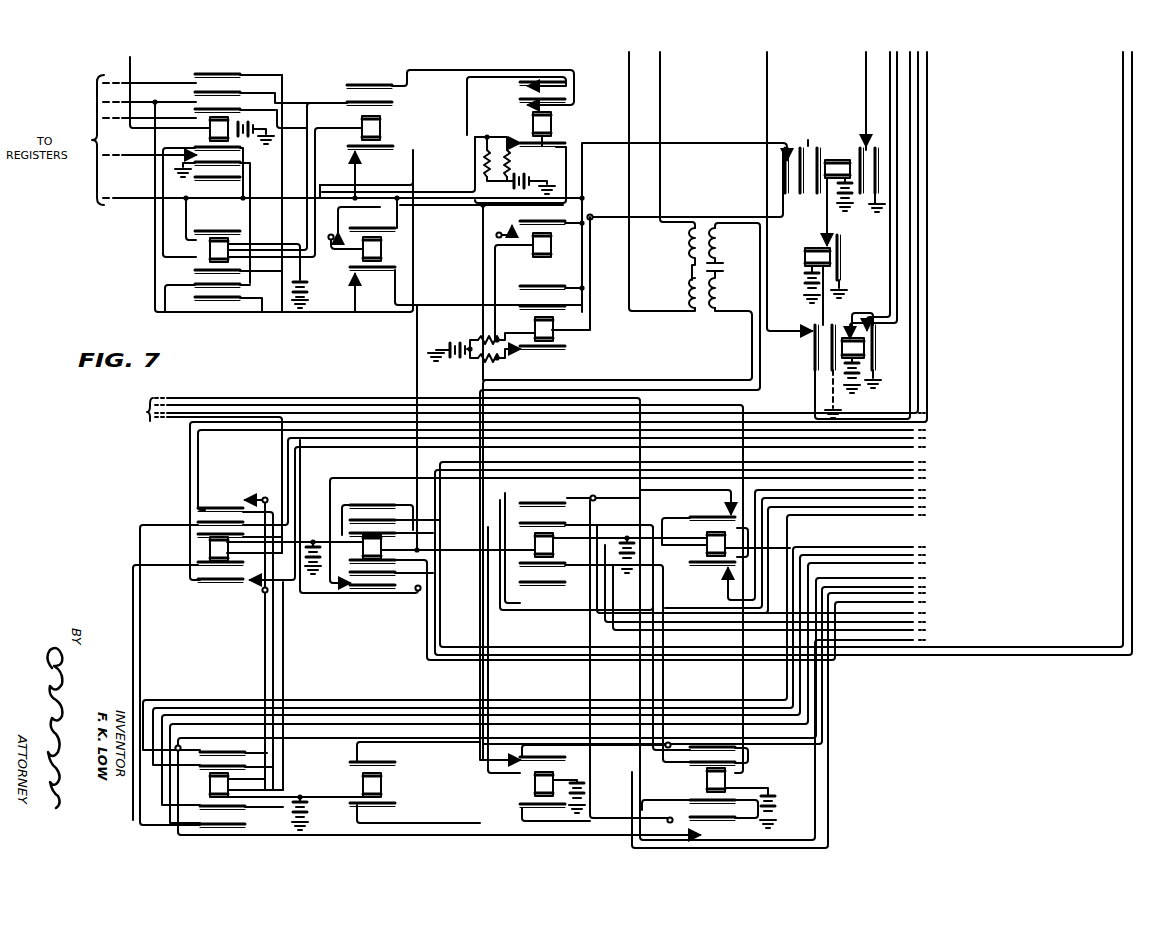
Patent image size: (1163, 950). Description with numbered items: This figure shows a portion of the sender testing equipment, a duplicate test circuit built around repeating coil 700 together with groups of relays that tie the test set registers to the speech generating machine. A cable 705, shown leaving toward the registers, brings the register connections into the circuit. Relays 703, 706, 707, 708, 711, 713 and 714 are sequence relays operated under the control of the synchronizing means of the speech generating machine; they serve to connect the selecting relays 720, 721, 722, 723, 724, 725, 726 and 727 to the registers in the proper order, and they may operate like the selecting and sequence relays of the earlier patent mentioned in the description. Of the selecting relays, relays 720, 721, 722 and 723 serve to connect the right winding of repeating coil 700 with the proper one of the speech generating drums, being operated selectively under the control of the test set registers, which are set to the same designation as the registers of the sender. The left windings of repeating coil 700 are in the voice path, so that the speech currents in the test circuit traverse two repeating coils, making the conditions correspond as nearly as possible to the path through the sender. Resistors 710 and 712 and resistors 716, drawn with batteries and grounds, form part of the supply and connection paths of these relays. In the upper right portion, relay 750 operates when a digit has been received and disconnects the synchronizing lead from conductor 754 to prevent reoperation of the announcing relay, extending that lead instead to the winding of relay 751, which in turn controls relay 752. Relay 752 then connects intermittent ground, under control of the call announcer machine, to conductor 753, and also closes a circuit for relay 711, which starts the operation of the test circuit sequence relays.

The repeating coil 700 is at (690, 262).
The relay 703 is at (221, 117).
The register cable 705 is at (138, 202).
The relay 706 is at (219, 238).
The relay 707 is at (383, 244).
The relay 708 is at (553, 329).
The resistor 710 is at (479, 336).
The relay 711 is at (541, 258).
The resistor 712 is at (488, 362).
The relay 713 is at (374, 141).
The relay 714 is at (553, 124).
The resistors 716 is at (512, 162).
The relay 720 is at (535, 784).
The relay 721 is at (385, 785).
The relay 722 is at (210, 785).
The relay 723 is at (707, 780).
The relay 724 is at (208, 548).
The relay 725 is at (723, 532).
The relay 726 is at (372, 560).
The relay 727 is at (545, 558).
The relay 750 is at (864, 347).
The relay 751 is at (821, 248).
The relay 752 is at (836, 160).
The conductor 753 is at (865, 88).
The conductor 754 is at (766, 88).